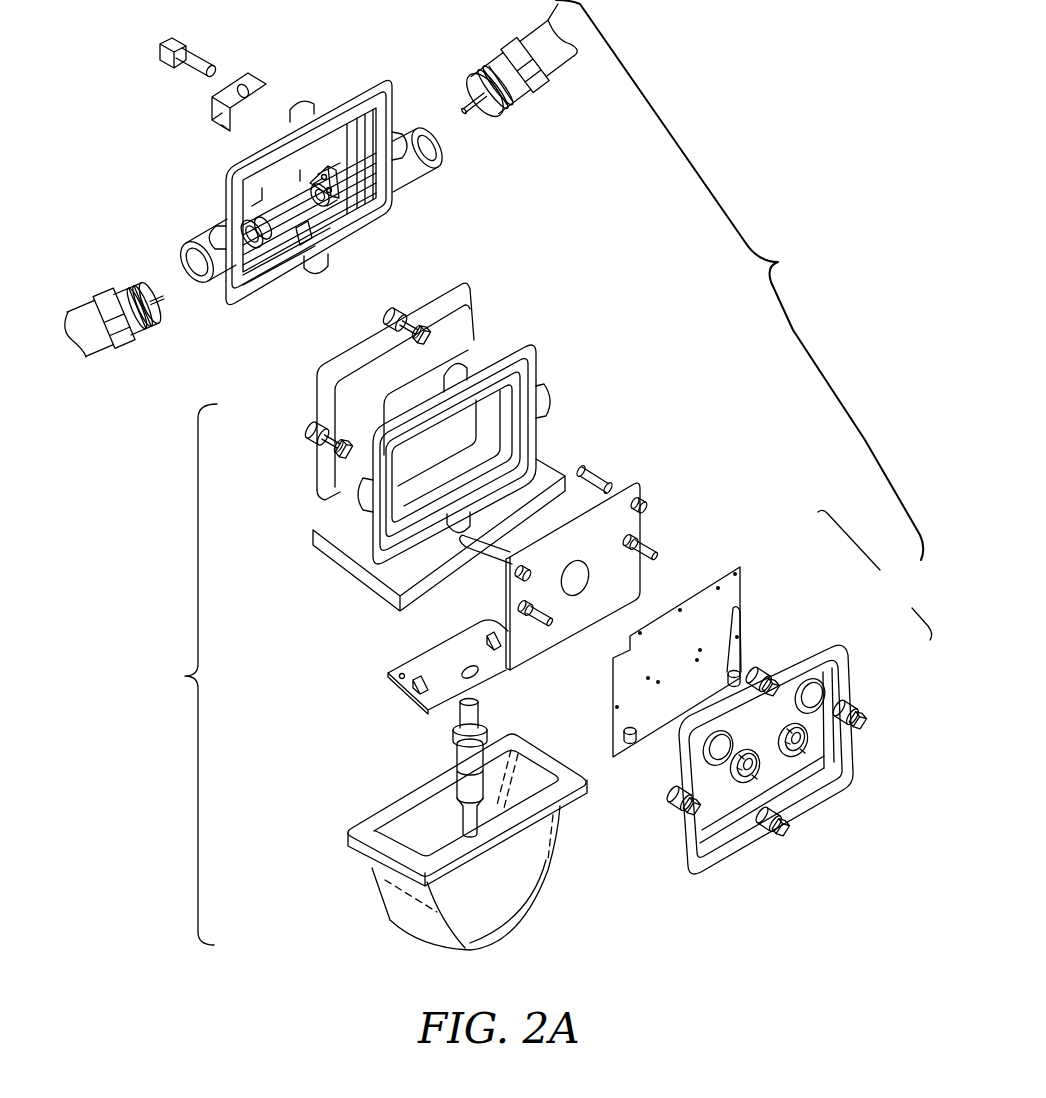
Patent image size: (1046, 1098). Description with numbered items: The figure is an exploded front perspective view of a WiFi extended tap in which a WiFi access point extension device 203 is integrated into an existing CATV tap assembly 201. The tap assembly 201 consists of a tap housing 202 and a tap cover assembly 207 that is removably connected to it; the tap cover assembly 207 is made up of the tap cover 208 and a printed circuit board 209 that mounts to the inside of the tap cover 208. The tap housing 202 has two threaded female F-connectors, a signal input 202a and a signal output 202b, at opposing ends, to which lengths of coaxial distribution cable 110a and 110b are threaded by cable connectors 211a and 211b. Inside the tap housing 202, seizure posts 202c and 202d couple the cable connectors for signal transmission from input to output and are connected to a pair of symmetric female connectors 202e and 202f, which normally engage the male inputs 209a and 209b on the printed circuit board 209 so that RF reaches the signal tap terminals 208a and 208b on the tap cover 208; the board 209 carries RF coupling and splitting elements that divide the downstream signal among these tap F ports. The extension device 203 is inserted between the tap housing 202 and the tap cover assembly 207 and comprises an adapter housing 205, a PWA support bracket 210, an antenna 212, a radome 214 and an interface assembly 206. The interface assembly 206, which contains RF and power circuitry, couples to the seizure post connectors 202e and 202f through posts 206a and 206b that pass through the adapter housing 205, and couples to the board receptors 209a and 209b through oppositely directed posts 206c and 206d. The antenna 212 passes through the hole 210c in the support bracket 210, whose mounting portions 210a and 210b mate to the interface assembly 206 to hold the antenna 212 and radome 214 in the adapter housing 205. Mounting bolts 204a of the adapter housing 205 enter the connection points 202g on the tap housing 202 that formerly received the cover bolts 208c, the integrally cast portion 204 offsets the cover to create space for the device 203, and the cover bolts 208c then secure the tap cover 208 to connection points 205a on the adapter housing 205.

The coaxial cable 110a is at (85, 300).
The coaxial cable 110b is at (565, 86).
The tap assembly 201 is at (739, 280).
The tap housing 202 is at (411, 95).
The signal input connector 202a is at (182, 251).
The signal output connector 202b is at (426, 158).
The seizure post 202c is at (245, 248).
The seizure post 202d is at (332, 205).
The female connector 202e is at (300, 248).
The female connector 202f is at (338, 186).
The connection point 202g is at (300, 108).
The WiFi access point extension device 203 is at (176, 674).
The portion of the adapter housing 204 is at (452, 286).
The mounting bolt 204a is at (432, 318).
The adapter housing 205 is at (290, 417).
The connection point 205a is at (470, 365).
The interface assembly 206 is at (563, 575).
The post 206a is at (487, 553).
The post 206b is at (592, 475).
The post 206c is at (527, 616).
The post 206d is at (660, 552).
The tap cover assembly 207 is at (875, 575).
The tap cover 208 is at (766, 761).
The signal tap terminal 208a is at (745, 780).
The signal tap terminal 208b is at (800, 748).
The cover bolt 208c is at (796, 690).
The printed circuit board 209 is at (717, 659).
The male input 209a is at (632, 741).
The male input 209b is at (728, 668).
The PWA support bracket 210 is at (395, 678).
The mounting portion 210a is at (420, 690).
The mounting portion 210b is at (486, 640).
The hole 210c is at (466, 670).
The cable connector 211a is at (144, 326).
The cable connector 211b is at (495, 112).
The antenna 212 is at (455, 752).
The radome 214 is at (372, 870).